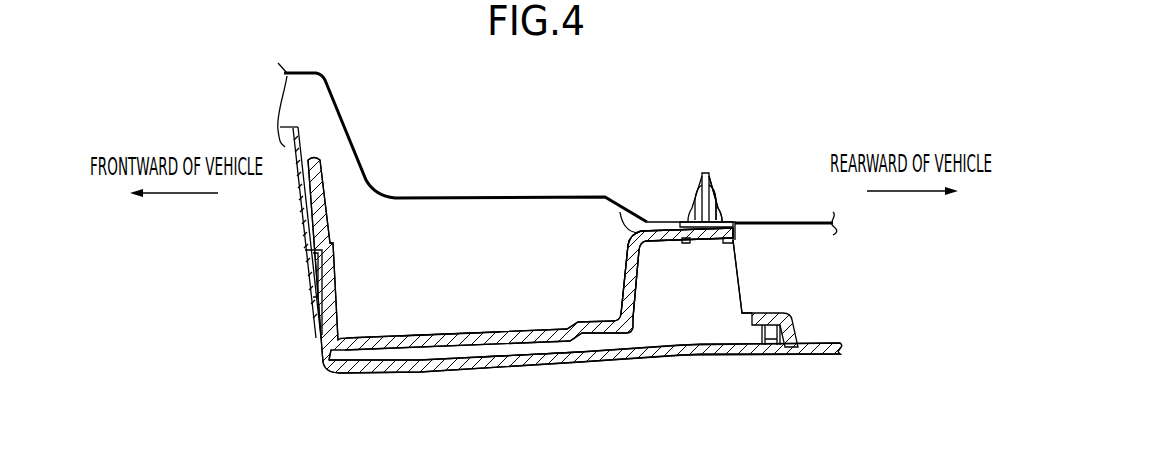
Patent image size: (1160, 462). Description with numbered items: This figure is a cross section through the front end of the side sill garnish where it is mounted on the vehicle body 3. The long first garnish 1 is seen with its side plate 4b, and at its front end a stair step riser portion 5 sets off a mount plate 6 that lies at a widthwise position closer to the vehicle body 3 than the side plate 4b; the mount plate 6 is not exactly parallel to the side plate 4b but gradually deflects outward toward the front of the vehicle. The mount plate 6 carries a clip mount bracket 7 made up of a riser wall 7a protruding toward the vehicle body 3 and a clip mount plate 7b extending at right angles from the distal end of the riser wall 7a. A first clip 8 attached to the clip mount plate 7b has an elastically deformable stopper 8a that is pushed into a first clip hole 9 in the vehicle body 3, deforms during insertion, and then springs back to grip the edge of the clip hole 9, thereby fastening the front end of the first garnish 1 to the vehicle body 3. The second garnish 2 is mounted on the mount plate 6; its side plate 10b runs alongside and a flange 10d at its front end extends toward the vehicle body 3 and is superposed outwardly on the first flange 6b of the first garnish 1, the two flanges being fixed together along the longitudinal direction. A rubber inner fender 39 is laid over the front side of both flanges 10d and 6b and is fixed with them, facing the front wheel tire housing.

The first garnish 1 is at (437, 334).
The second garnish 2 is at (453, 369).
The vehicle body 3 is at (787, 220).
The side plate 4b is at (818, 343).
The stair step riser portion 5 is at (797, 322).
The mount plate 6 is at (480, 333).
The first flange 6b is at (333, 269).
The clip mount bracket 7 is at (598, 144).
The riser wall 7a is at (623, 258).
The clip mount plate 7b is at (661, 226).
The first clip 8 is at (733, 175).
The stopper 8a is at (690, 203).
The first clip hole 9 is at (729, 209).
The side plate 10b is at (523, 361).
The flange 10d is at (322, 345).
The inner fender 39 is at (297, 218).